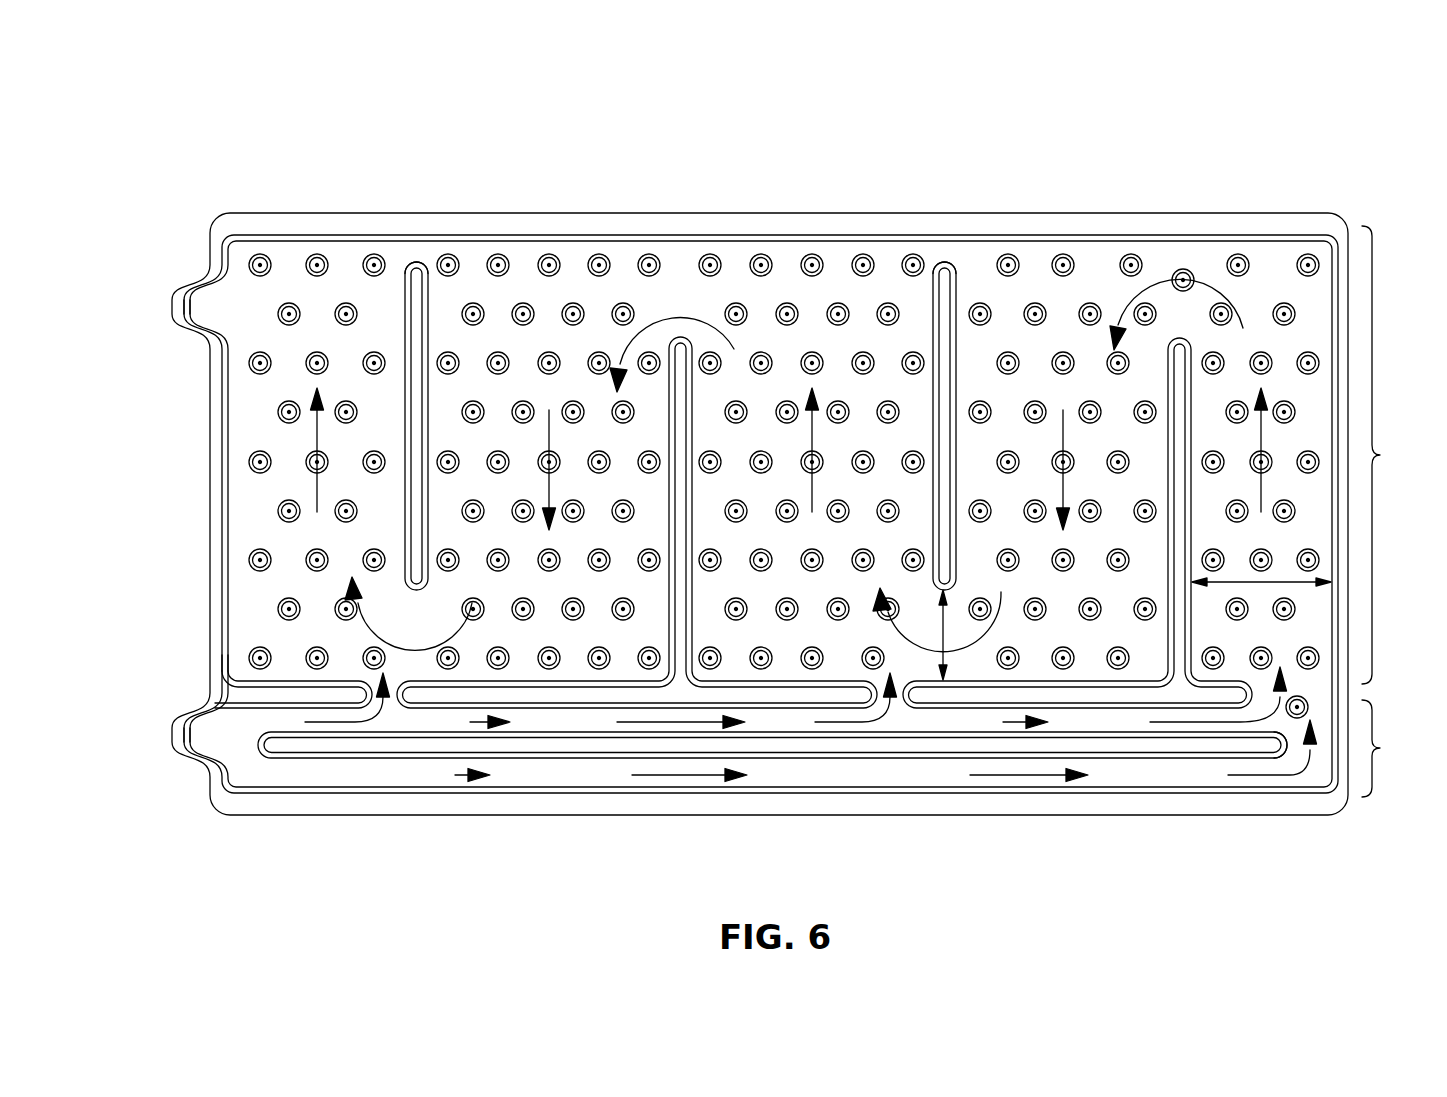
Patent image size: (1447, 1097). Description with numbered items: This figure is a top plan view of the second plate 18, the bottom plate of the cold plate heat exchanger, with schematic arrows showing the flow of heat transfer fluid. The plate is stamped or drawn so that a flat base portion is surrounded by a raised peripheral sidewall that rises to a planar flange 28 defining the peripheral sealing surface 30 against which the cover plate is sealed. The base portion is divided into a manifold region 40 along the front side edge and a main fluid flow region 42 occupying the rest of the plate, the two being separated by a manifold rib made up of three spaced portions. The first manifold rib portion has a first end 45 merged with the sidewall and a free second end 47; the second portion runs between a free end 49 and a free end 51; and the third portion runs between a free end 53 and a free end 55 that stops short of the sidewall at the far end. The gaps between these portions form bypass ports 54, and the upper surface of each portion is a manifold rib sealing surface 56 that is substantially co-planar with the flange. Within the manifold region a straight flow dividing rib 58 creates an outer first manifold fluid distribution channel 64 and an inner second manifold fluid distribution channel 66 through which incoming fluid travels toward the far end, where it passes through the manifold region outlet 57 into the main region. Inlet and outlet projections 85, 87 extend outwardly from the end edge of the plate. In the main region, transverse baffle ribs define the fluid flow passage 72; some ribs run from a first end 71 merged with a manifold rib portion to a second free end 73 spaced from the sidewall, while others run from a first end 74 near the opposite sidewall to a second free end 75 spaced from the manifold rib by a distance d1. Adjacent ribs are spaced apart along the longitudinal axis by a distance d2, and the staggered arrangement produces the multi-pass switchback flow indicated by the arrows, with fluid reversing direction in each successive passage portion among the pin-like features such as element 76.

The second plate 18 is at (1162, 141).
The flange 28 is at (366, 212).
The peripheral sealing surface 30 is at (288, 222).
The manifold region 40 is at (1394, 748).
The main fluid flow region 42 is at (869, 455).
The first end 45 is at (240, 655).
The second, free end 47 is at (370, 722).
The first, free end 49 is at (390, 722).
The second, free end 51 is at (893, 700).
The first, free end 53 is at (905, 722).
The bypass port 54 is at (383, 700).
The second, free end 55 is at (1262, 760).
The manifold rib sealing surface 56 is at (524, 698).
The manifold region outlet 57 is at (1312, 690).
The flow dividing rib 58 is at (292, 762).
The first manifold fluid distribution channel 64 is at (673, 784).
The second manifold fluid distribution channel 66 is at (790, 720).
The first end 71 is at (710, 655).
The fluid flow passage 72 is at (890, 268).
The second free end 73 is at (700, 322).
The first end 74 is at (415, 262).
The second, free end 75 is at (430, 586).
The pin fin 76 is at (250, 461).
The inlet projection 85 is at (183, 748).
The outlet projection 87 is at (183, 285).
The predetermined distance d1 is at (955, 615).
The predetermined distance d2 is at (1328, 578).